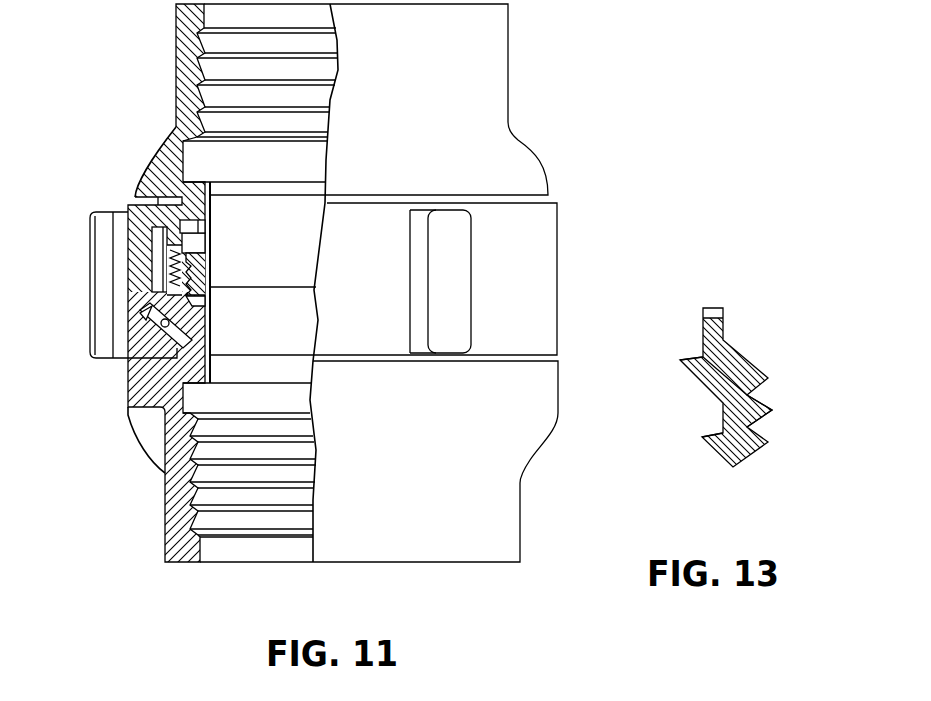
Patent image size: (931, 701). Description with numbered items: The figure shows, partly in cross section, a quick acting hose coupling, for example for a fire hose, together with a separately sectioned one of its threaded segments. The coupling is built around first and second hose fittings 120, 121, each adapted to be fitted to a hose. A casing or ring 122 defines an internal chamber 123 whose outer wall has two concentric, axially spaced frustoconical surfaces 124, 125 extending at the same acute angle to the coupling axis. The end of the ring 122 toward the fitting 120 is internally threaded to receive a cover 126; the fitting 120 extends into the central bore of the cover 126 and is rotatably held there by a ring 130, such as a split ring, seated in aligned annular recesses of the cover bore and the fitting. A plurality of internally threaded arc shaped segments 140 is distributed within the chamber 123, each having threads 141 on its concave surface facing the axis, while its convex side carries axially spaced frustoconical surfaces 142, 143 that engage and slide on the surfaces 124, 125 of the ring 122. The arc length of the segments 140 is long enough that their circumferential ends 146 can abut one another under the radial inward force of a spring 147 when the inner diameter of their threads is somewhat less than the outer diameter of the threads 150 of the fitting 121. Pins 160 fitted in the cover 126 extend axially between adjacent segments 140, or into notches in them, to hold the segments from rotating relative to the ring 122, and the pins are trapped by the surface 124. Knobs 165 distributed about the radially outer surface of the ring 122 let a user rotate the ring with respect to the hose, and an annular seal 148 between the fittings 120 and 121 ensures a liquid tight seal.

In FIG. 11, the first hose fitting 120 is at (176, 84).
In FIG. 11, the second hose fitting 121 is at (180, 563).
In FIG. 11, the casing or ring 122 is at (548, 237).
In FIG. 11, the internal chamber 123 is at (145, 277).
In FIG. 11, the frustoconical surface 124 is at (147, 318).
In FIG. 11, the frustoconical surface 125 is at (158, 290).
In FIG. 11, the cover 126 is at (143, 178).
In FIG. 11, the ring 130 is at (193, 216).
In FIG. 11, the arc shaped segment 140 is at (206, 262).
In FIG. 13, the arc shaped segment 140 is at (716, 318).
In FIG. 13, the threads 141 is at (768, 398).
In FIG. 13, the frustoconical surface 142 is at (703, 382).
In FIG. 13, the frustoconical surface 143 is at (718, 452).
In FIG. 13, the circumferential ends 146 is at (837, 693).
In FIG. 11, the spring 147 is at (169, 324).
In FIG. 11, the annular seal 148 is at (208, 288).
In FIG. 11, the threads 150 is at (182, 338).
In FIG. 11, the pins 160 is at (180, 242).
In FIG. 11, the knobs 165 is at (458, 288).